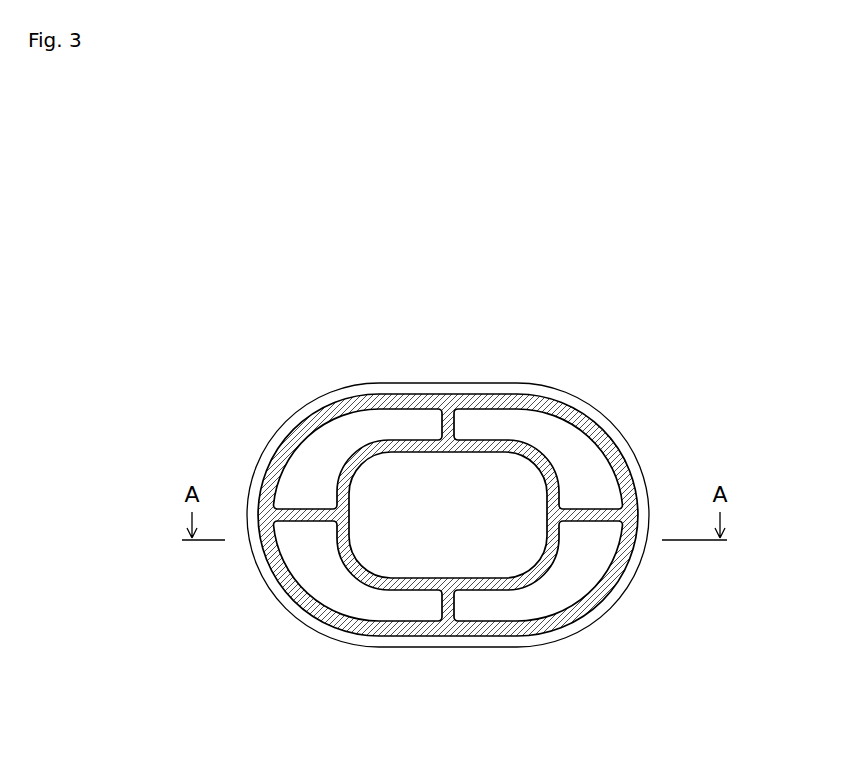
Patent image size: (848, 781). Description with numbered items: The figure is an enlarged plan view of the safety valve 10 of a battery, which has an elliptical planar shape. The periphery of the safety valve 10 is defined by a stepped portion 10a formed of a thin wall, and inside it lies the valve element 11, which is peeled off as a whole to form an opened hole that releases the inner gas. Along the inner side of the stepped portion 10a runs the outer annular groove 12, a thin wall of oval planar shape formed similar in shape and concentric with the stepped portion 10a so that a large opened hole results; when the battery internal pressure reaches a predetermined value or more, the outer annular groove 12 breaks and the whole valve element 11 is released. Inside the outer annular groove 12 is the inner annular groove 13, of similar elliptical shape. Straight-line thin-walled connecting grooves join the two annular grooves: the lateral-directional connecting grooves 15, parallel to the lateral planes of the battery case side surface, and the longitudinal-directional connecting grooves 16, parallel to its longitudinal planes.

The safety valve 10 is at (590, 294).
The valve element 11 is at (258, 545).
The stepped portion 10a is at (589, 408).
The outer annular groove 12 is at (381, 403).
The inner annular groove 13 is at (365, 457).
The lateral-directional connecting grooves 15 is at (303, 515).
The longitudinal-directional connecting grooves 16 is at (449, 423).